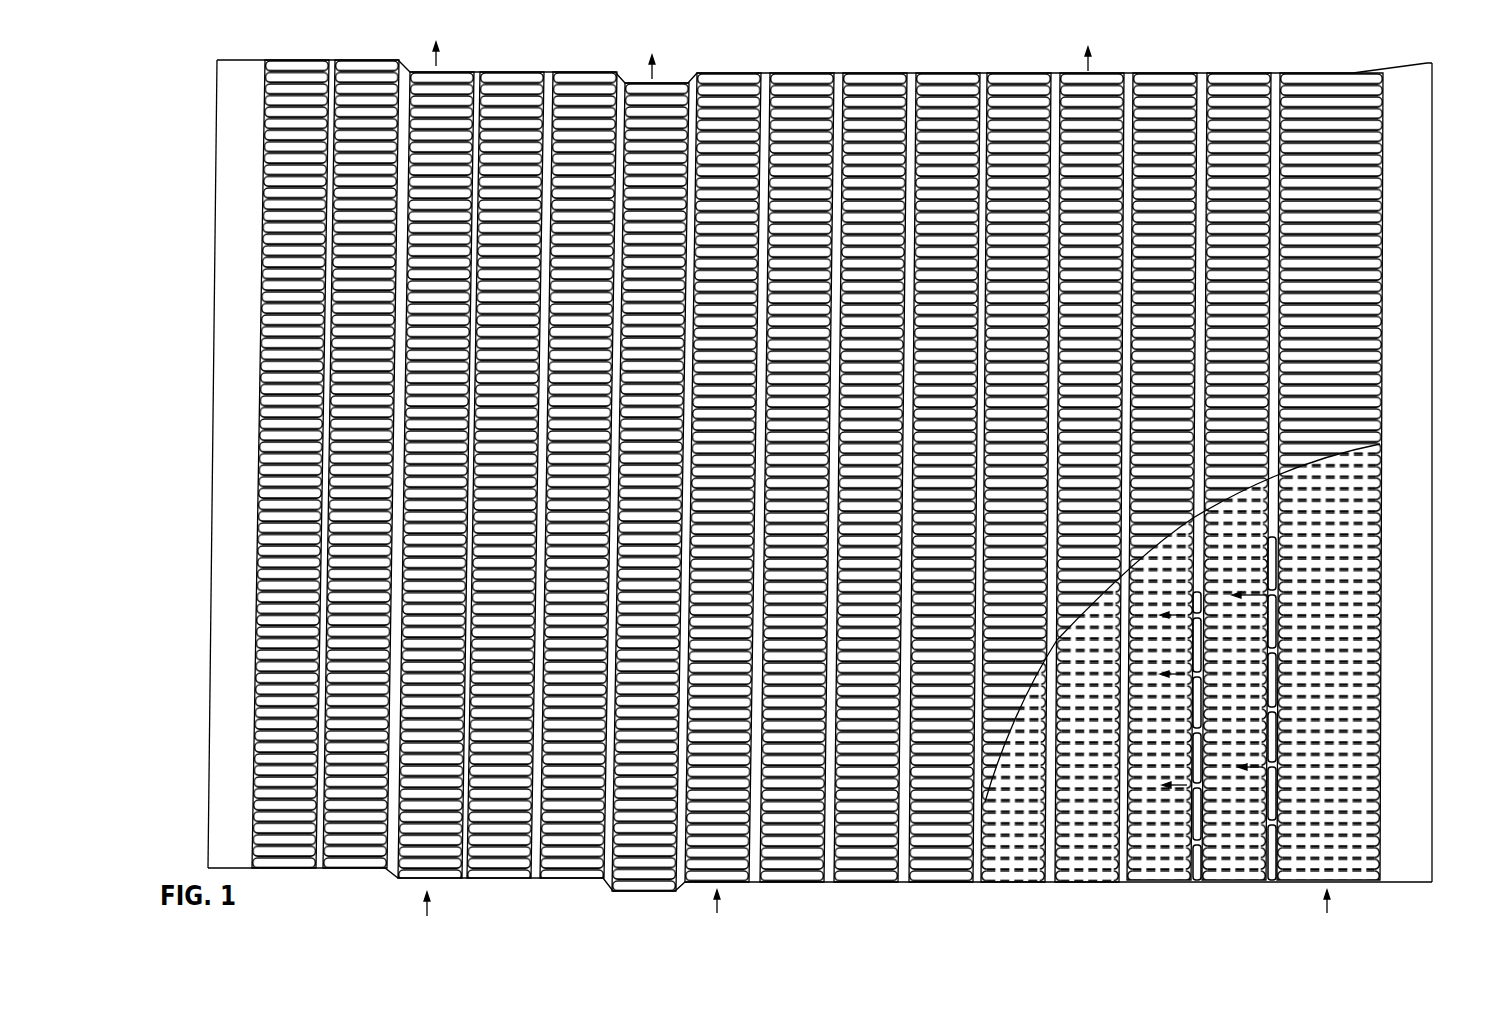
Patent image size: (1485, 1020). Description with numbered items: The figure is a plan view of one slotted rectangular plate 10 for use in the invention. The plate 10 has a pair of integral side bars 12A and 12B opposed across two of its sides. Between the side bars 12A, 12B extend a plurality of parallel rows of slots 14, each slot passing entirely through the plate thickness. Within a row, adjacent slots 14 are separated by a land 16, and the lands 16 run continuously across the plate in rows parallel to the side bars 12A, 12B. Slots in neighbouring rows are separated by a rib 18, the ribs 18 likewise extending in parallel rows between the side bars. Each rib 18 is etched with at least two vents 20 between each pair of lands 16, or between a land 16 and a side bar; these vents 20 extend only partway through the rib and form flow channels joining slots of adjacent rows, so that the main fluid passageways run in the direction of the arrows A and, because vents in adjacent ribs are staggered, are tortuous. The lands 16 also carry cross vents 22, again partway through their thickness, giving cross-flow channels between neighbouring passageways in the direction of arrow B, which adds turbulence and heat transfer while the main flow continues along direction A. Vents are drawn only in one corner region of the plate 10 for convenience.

The rectangular plate 10 is at (205, 605).
The side bar 12A is at (1418, 146).
The side bar 12B is at (223, 543).
The slots 14 is at (817, 477).
The land 16 is at (478, 73).
The rib 18 is at (795, 138).
The vents 20 is at (1157, 868).
The cross vents 22 is at (1283, 536).